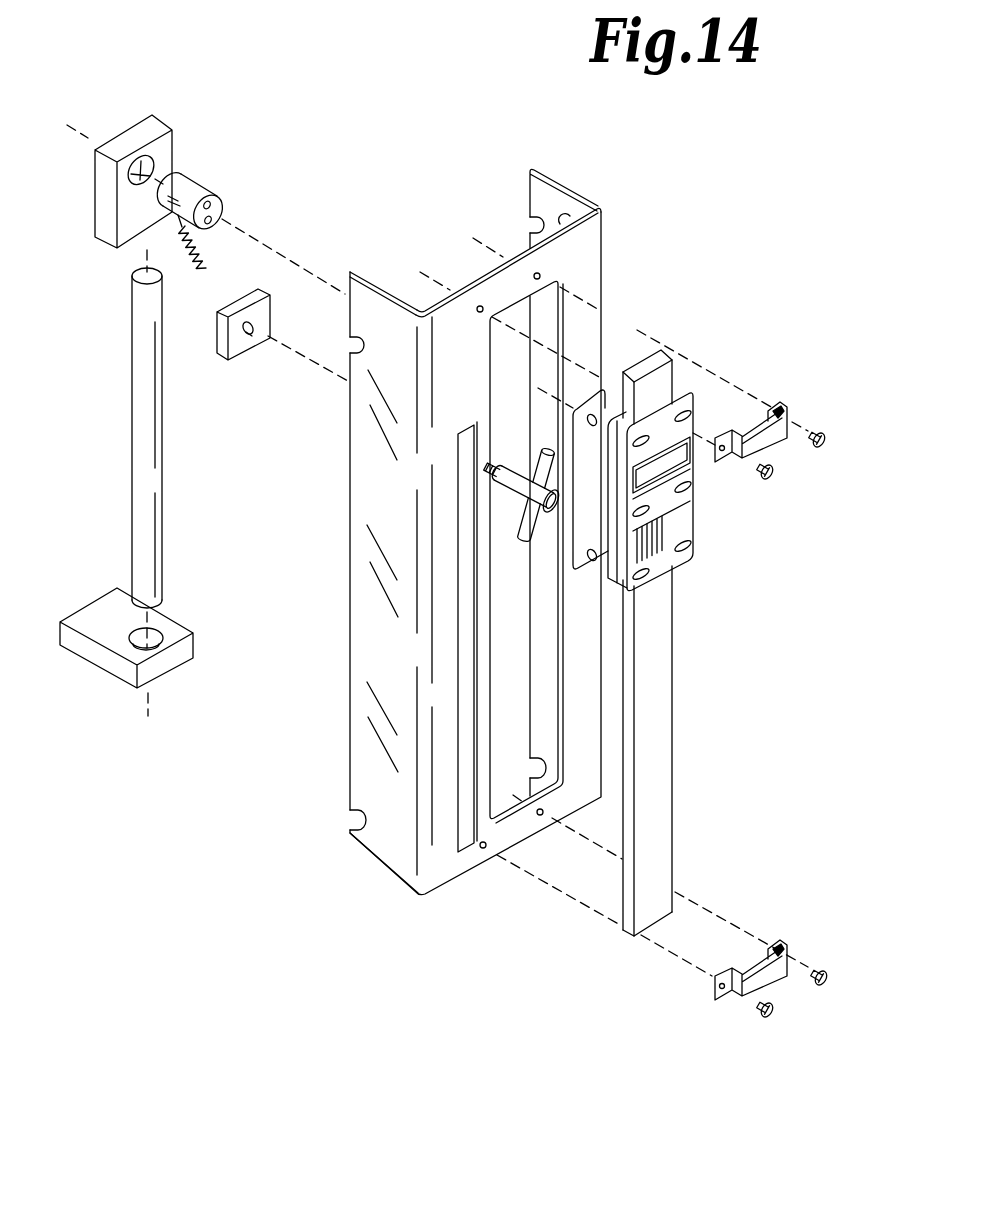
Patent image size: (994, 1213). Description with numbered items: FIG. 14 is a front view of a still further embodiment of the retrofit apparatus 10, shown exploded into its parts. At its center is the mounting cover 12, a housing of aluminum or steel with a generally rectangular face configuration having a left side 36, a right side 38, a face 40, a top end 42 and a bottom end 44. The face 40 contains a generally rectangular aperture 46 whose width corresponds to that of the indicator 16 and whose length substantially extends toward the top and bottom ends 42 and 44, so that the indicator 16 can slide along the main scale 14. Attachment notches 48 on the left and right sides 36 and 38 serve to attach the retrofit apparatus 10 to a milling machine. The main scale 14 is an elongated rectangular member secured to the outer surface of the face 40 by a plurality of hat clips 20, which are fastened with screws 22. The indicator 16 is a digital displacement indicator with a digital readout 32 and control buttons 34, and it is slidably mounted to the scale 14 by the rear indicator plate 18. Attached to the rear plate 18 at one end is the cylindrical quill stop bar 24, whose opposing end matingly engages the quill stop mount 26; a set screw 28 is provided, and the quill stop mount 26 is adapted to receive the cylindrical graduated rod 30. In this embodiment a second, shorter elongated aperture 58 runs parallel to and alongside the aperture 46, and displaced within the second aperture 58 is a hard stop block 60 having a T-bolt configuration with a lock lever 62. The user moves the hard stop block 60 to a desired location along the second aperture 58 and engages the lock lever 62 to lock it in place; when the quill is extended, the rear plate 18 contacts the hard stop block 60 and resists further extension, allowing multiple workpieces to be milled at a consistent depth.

The retrofit apparatus 10 is at (601, 168).
The mounting cover 12 is at (603, 277).
The main scale 14 is at (675, 648).
The indicator 16 is at (693, 511).
The rear indicator plate 18 is at (603, 405).
The hat clips 20 is at (777, 408).
The screws 22 is at (822, 452).
The quill stop bar 24 is at (202, 187).
The quill stop mount 26 is at (143, 125).
The set screw 28 is at (197, 240).
The cylindrical graduated rod 30 is at (132, 368).
The digital readout 32 is at (666, 465).
The control buttons 34 is at (633, 571).
The left side 36 is at (373, 778).
The right side 38 is at (534, 186).
The face 40 is at (443, 833).
The top end 42 is at (523, 248).
The bottom end 44 is at (493, 860).
The aperture 46 is at (493, 745).
The attachment notches 48 is at (351, 346).
The second aperture 58 is at (465, 513).
The hard stop block 60 is at (258, 314).
The lock lever 62 is at (520, 477).